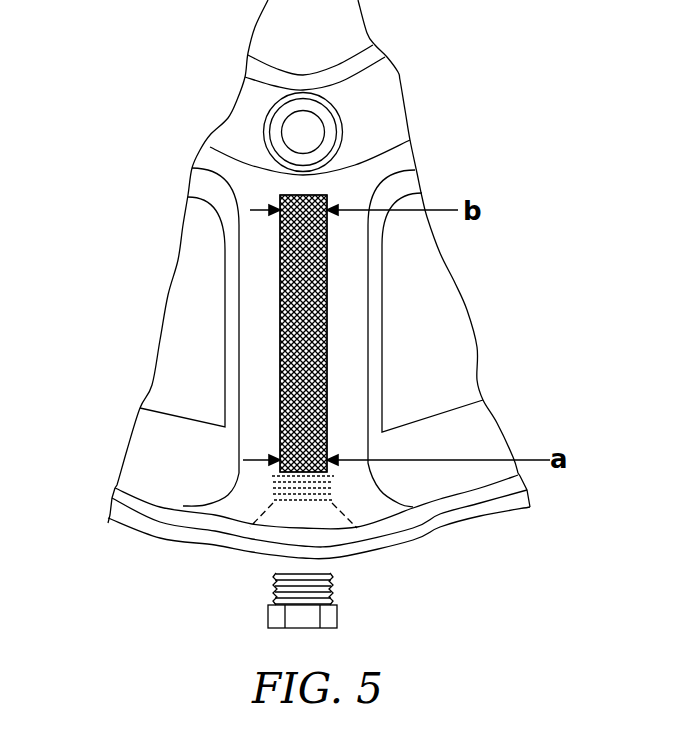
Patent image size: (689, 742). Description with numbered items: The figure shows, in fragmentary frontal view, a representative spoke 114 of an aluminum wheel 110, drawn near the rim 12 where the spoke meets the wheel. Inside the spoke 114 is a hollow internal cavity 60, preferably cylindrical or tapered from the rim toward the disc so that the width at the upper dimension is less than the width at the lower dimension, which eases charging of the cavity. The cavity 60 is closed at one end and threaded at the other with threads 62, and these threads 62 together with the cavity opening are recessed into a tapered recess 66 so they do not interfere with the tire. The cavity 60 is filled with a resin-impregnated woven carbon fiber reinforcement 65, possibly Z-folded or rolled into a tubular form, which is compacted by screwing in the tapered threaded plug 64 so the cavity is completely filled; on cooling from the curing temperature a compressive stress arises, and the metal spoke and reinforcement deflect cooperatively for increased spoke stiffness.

The wheel 110 is at (462, 278).
The spoke 114 is at (223, 268).
The rim 12 is at (453, 532).
The resin-impregnated woven carbon fiber reinforcement 65 is at (288, 327).
The internal cavity 60 is at (280, 404).
The threads 62 is at (273, 488).
The tapered recess 66 is at (347, 553).
The threaded plug 64 is at (265, 612).